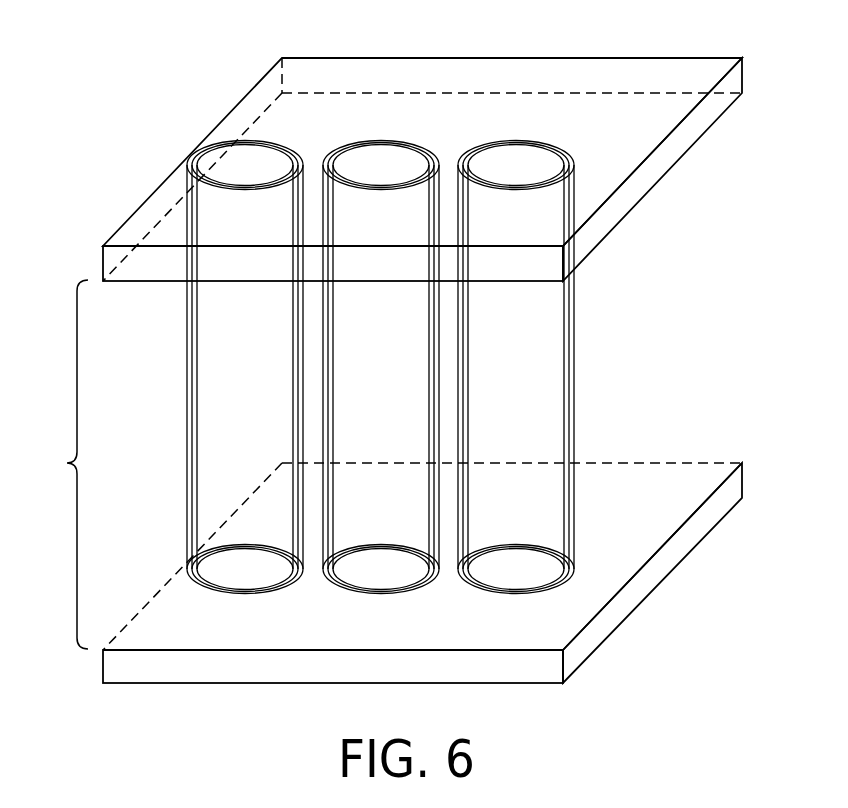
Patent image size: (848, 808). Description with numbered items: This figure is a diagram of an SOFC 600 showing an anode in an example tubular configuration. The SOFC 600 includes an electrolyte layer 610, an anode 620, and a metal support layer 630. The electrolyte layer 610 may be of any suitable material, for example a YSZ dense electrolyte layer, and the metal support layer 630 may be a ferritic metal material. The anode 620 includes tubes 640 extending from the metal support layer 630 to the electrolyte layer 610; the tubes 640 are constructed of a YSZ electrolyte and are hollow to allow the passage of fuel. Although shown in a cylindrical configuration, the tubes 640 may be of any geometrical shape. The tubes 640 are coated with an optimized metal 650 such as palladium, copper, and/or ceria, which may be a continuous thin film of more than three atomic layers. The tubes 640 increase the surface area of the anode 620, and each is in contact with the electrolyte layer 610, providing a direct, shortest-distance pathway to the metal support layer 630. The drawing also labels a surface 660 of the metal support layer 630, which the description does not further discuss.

The SOFC 600 is at (178, 55).
The electrolyte layer 610 is at (657, 150).
The anode 620 is at (55, 464).
The metal support layer 630 is at (517, 672).
The tubes 640 is at (568, 422).
The optimized metal 650 is at (573, 315).
The top surface of bottom plate 660 is at (635, 549).